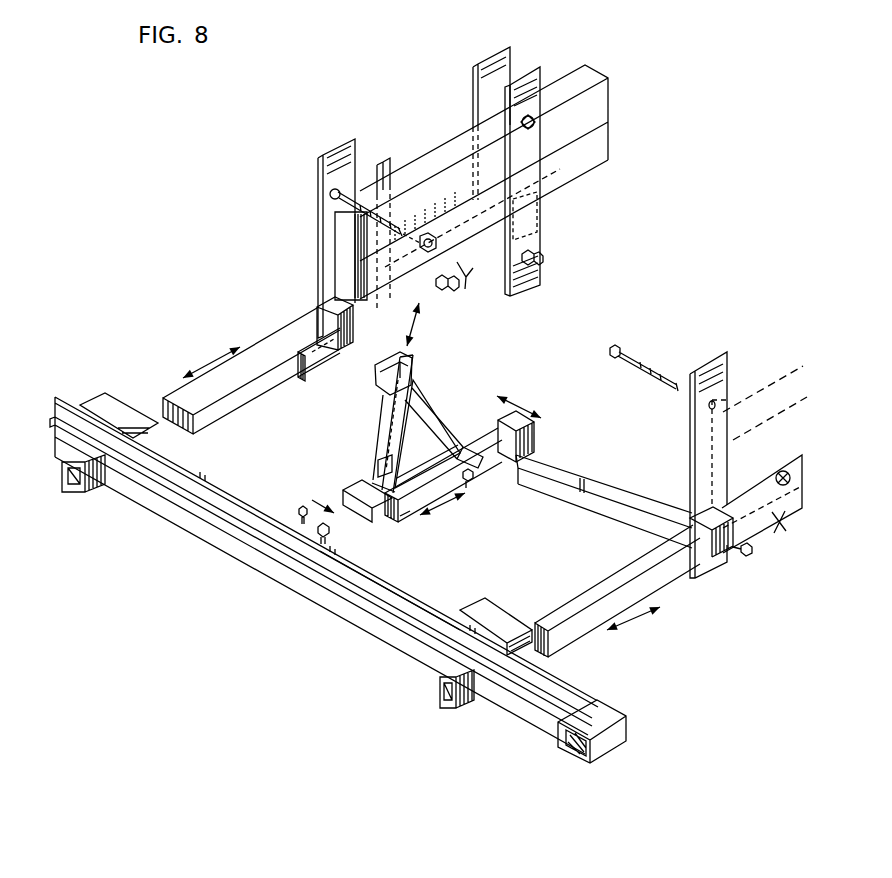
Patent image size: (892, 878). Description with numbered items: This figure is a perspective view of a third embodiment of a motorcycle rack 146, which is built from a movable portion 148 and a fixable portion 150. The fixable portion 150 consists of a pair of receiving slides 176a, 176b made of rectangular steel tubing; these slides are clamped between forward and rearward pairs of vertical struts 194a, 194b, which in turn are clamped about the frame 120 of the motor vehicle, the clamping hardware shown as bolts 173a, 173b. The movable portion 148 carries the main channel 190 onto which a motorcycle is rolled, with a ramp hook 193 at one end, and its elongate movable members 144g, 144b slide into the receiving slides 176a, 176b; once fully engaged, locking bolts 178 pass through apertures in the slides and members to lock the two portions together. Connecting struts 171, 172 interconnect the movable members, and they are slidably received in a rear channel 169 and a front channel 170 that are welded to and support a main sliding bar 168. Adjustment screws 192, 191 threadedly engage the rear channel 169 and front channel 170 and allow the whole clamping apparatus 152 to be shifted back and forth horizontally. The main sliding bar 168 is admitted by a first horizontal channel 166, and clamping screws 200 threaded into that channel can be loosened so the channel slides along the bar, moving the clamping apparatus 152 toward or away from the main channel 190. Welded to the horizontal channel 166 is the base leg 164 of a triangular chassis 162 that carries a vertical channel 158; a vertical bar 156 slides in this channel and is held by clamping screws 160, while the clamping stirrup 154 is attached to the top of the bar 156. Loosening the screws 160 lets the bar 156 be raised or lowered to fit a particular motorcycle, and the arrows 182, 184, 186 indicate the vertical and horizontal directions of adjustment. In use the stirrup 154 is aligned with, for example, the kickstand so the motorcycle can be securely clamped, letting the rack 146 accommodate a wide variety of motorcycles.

The frame 120 is at (609, 128).
The elongate movable member 144b is at (578, 627).
The elongate movable member 144g is at (165, 408).
The rack 146 is at (210, 270).
The movable portion 148 is at (186, 354).
The fixable portion 150 is at (485, 318).
The adjustable clamping apparatus 152 is at (367, 410).
The clamping stirrup 154 is at (352, 388).
The vertical bar 156 is at (412, 363).
The vertical channel 158 is at (374, 448).
The clamping screws 160 is at (417, 425).
The triangular chassis 162 is at (416, 404).
The base leg 164 is at (471, 481).
The first horizontal channel 166 is at (407, 520).
The main sliding bar 168 is at (362, 497).
The rear channel 169 is at (318, 538).
The front channel 170 is at (533, 444).
The connecting strut 171 is at (433, 594).
The connecting strut 172 is at (580, 490).
The clamp bolt 173a is at (332, 192).
The clamp bolt 173b is at (663, 376).
The receiving slide 176a is at (470, 288).
The receiving slide 176b is at (779, 524).
The locking bolts 178 is at (433, 324).
The arrow 182 is at (518, 417).
The arrow 184 is at (447, 507).
The arrow 186 is at (371, 514).
The main channel 190 is at (250, 561).
The adjustment screw 191 is at (488, 474).
The adjustment screw 192 is at (303, 506).
The ramp hook 193 is at (616, 733).
The vertical struts 194a is at (340, 152).
The vertical struts 194b is at (698, 407).
The clamping screws 200 is at (412, 515).